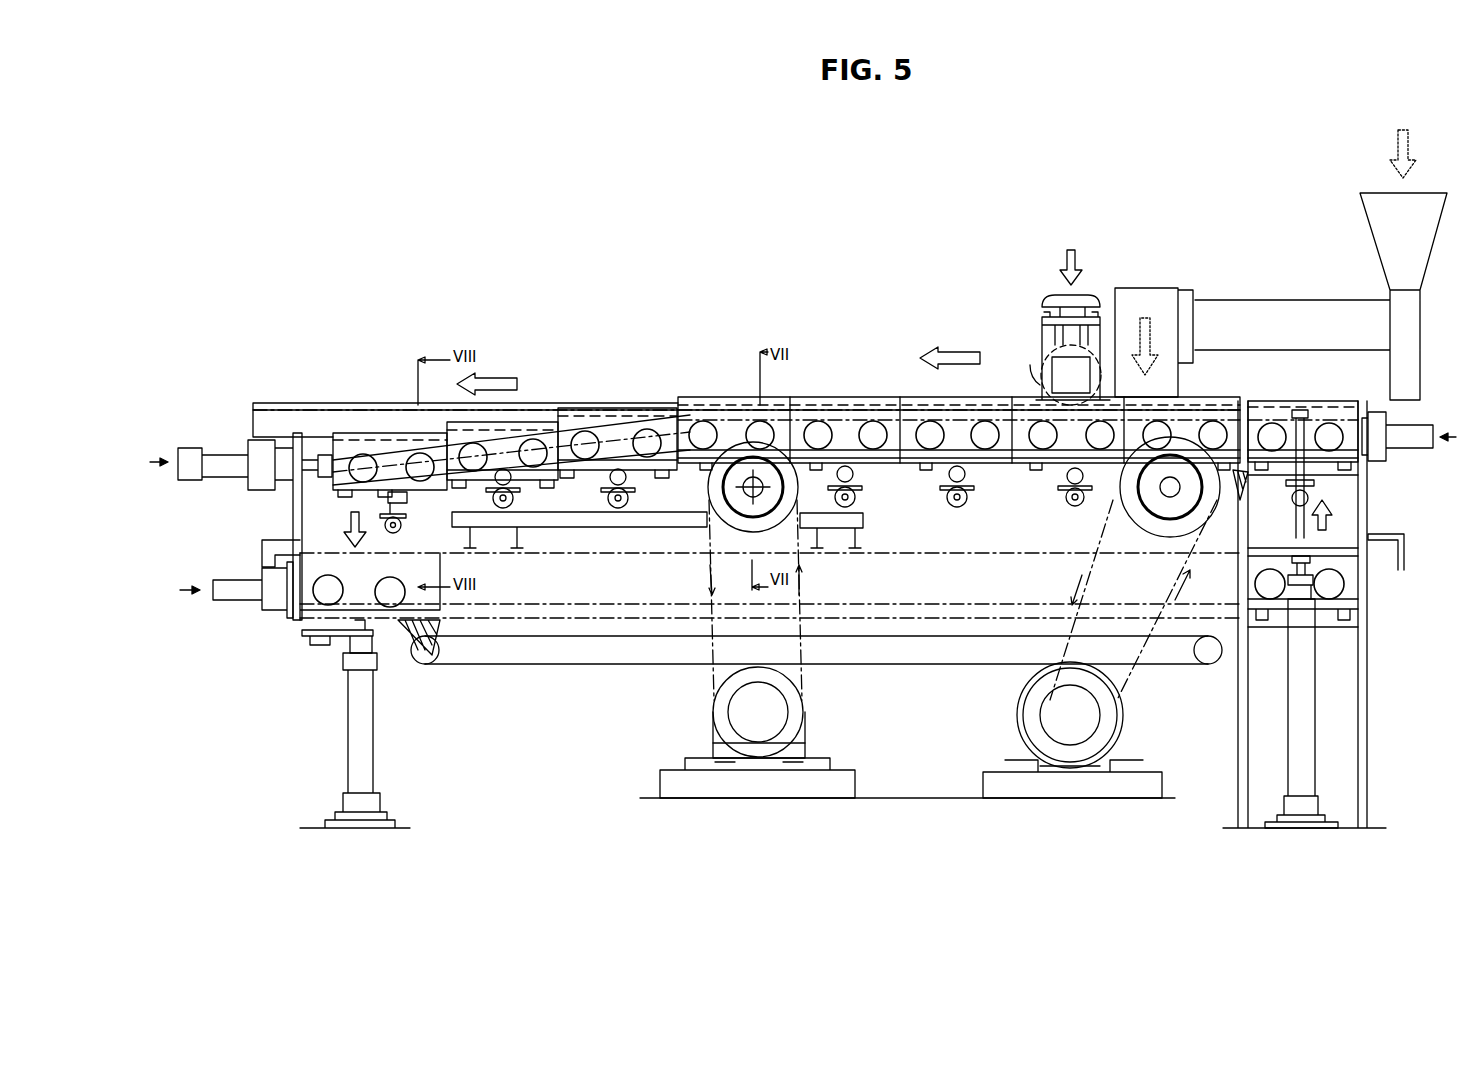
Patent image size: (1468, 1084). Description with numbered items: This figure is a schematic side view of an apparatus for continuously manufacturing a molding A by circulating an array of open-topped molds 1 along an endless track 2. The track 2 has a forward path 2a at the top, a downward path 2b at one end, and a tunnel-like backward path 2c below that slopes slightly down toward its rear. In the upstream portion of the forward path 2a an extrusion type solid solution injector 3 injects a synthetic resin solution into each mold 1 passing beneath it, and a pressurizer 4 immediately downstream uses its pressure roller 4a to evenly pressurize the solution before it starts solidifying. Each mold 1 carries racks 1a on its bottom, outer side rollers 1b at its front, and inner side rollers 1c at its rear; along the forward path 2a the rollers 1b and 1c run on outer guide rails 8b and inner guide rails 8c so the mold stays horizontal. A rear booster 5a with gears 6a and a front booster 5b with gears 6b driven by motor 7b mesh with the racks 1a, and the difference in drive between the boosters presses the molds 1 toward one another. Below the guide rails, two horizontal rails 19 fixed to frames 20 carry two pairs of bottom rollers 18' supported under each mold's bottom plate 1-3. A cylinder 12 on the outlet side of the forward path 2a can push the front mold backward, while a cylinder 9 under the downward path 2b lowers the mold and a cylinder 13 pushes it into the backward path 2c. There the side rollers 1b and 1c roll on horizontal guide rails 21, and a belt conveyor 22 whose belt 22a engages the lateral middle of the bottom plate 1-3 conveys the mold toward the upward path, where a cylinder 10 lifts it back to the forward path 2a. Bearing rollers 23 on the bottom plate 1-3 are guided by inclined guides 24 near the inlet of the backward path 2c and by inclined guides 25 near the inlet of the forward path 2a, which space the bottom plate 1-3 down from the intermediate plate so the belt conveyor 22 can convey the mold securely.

The mold 1 is at (1420, 437).
The racks 1a is at (980, 468).
The outer side rollers 1b is at (890, 400).
The inner side rollers 1c is at (818, 405).
The endless track 2 is at (752, 393).
The forward path 2a is at (710, 397).
The downward path 2b is at (320, 507).
The backward path 2c is at (543, 600).
The solid solution injector 3 is at (1275, 318).
The pressurizer 4 is at (1050, 297).
The pressure roller 4a is at (1045, 377).
The rear booster 5a is at (1068, 765).
The front booster 5b is at (758, 760).
The gears 6a is at (1127, 507).
The gears 6b is at (762, 497).
The motor 7b is at (800, 715).
The outer guide rails 8b is at (527, 480).
The inner guide rails 8c is at (384, 480).
The cylinder 9 is at (348, 743).
The cylinder 10 is at (1320, 720).
The cylinder 12 is at (222, 456).
The cylinder 13 is at (236, 598).
The bottom plate 1-3 is at (340, 513).
The bottom rollers 18' is at (544, 531).
The horizontal rails 19 is at (570, 503).
The frames 20 is at (470, 534).
The horizontal guide rails 21 is at (603, 606).
The belt conveyor 22 is at (650, 655).
The belt 22a is at (472, 640).
The bearing rollers 23 is at (345, 615).
The inclined guides 24 is at (410, 664).
The inclined guides 25 is at (1238, 489).
The molding A is at (303, 403).